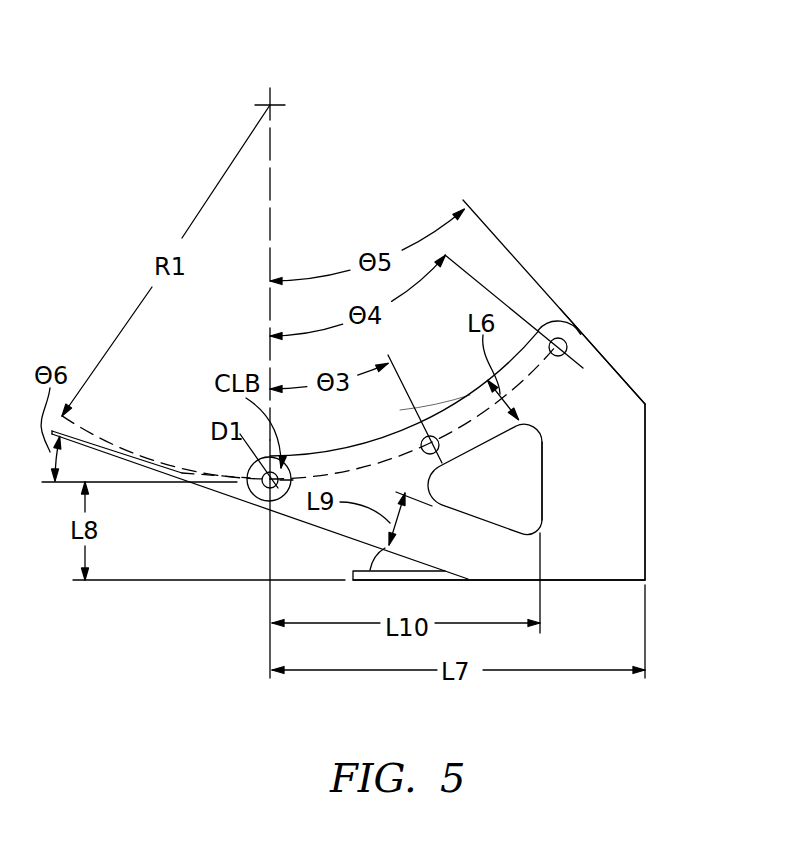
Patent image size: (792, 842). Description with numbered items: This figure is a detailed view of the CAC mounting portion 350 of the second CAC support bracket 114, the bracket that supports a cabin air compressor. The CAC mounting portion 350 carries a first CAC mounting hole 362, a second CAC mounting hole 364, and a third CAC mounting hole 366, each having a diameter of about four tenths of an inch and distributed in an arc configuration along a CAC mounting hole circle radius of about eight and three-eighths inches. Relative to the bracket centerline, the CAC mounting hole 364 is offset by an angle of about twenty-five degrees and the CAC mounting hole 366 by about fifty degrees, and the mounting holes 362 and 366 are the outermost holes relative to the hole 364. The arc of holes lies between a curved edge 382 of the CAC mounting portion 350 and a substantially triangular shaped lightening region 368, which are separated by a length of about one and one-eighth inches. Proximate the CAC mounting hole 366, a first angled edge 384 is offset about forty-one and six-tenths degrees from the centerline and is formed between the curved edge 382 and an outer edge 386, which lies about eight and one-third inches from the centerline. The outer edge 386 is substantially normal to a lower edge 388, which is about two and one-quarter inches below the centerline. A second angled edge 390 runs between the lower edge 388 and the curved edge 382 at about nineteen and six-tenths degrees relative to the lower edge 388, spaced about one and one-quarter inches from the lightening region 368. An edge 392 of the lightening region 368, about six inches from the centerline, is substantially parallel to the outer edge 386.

The second CAC support bracket 114 is at (621, 116).
The CAC mounting portion 350 is at (253, 502).
The first CAC mounting hole 362 is at (251, 466).
The second CAC mounting hole 364 is at (421, 441).
The third CAC mounting hole 366 is at (567, 343).
The substantially triangular shaped lightening region 368 is at (525, 452).
The curved edge 382 is at (443, 407).
The first angled edge 384 is at (621, 375).
The outer edge 386 is at (645, 523).
The lower edge 388 is at (628, 582).
The second angled edge 390 is at (335, 533).
The edge of lightening region 392 is at (543, 493).